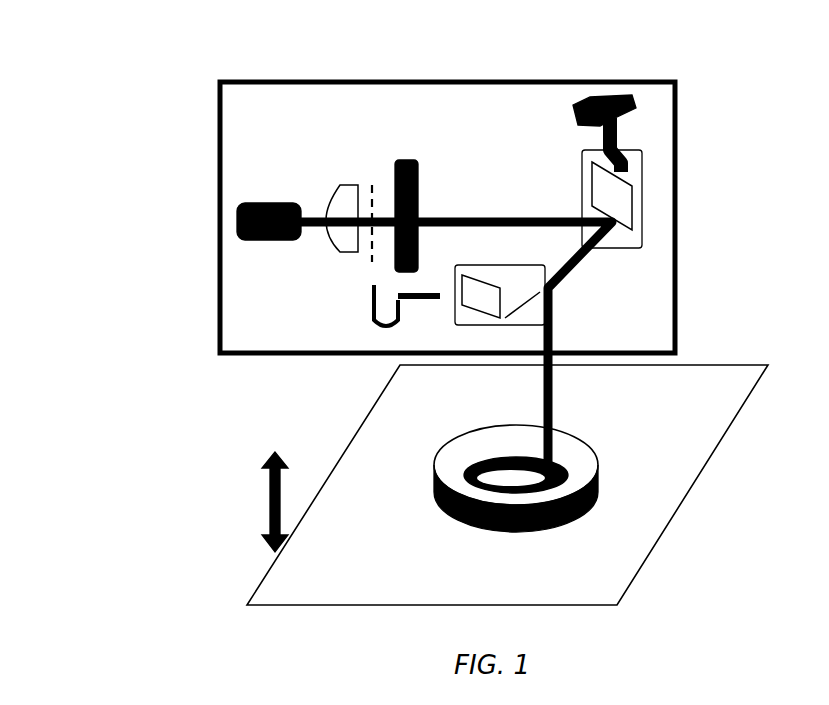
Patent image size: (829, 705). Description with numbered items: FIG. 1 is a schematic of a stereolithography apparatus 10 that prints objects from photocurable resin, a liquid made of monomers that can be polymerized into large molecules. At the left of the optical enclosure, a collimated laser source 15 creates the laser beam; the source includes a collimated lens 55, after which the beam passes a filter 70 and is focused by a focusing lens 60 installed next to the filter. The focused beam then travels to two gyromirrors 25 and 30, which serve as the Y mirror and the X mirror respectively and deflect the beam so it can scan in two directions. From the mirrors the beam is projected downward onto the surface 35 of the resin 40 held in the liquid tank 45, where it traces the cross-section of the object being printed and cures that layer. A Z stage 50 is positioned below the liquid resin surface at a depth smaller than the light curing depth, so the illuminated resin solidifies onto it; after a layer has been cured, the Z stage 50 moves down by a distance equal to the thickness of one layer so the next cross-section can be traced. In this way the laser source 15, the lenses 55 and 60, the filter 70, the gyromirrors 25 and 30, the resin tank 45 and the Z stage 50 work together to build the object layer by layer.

The apparatus 10 is at (126, 545).
The laser source 15 is at (246, 206).
The gyromirror 25 is at (628, 228).
The gyromirror 30 is at (386, 228).
The surface 35 is at (575, 455).
The resin 40 is at (433, 471).
The liquid tank 45 is at (675, 512).
The Z stage 50 is at (266, 480).
The collimated lens 55 is at (338, 188).
The focusing lens 60 is at (412, 160).
The filter 70 is at (374, 194).